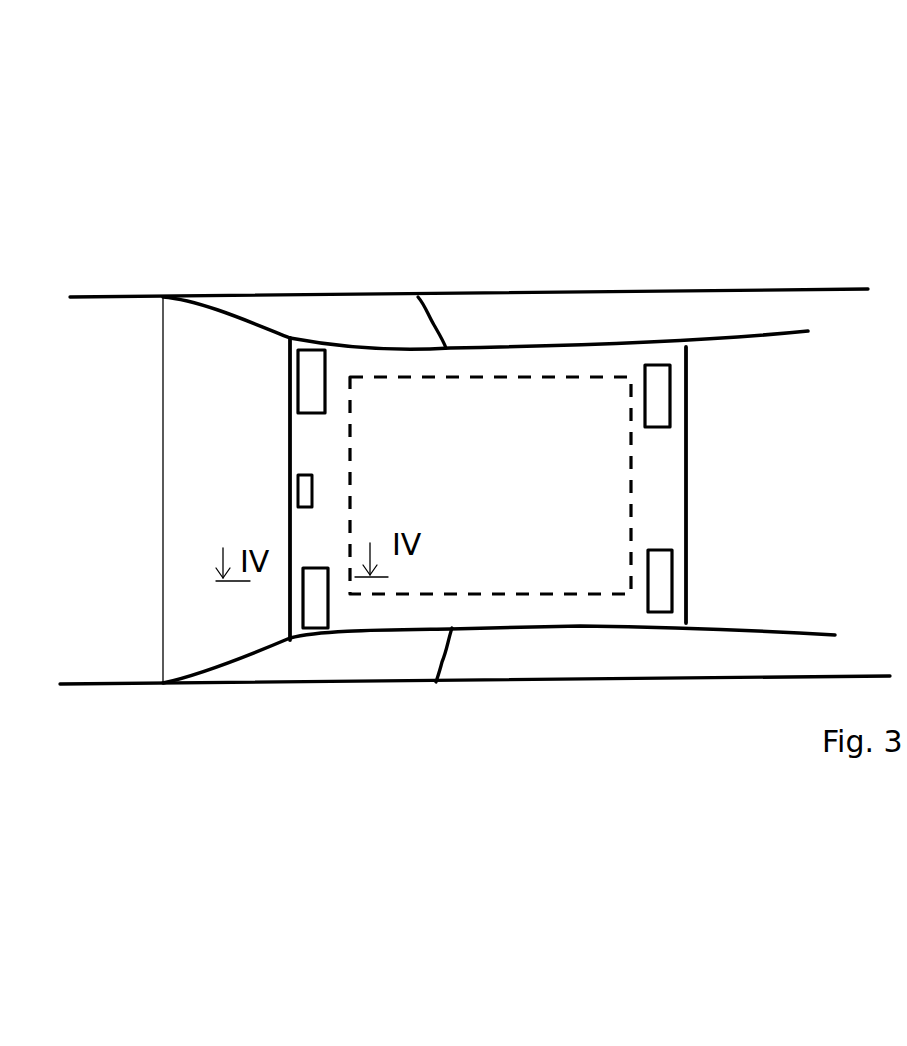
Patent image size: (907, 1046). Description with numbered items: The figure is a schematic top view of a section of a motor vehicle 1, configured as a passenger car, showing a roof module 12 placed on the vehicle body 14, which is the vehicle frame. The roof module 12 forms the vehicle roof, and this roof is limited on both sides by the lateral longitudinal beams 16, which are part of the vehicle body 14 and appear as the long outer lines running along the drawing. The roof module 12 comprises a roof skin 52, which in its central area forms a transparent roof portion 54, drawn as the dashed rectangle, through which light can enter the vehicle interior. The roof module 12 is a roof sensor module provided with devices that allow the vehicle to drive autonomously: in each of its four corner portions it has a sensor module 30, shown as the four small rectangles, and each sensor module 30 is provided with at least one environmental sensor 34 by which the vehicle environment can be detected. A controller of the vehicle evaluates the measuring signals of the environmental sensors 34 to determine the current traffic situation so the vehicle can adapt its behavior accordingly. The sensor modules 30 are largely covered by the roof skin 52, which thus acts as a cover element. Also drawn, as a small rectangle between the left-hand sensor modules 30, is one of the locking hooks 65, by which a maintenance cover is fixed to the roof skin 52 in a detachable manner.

The motor vehicle 1 is at (829, 118).
The roof module 12 is at (576, 345).
The vehicle body 14 is at (370, 342).
The lateral longitudinal beams 16 is at (460, 346).
The sensor module 30 is at (312, 378).
The environmental sensor 34 is at (459, 492).
The roof skin 52 is at (653, 483).
The transparent roof portion 54 is at (535, 565).
The locking hooks 65 is at (298, 494).